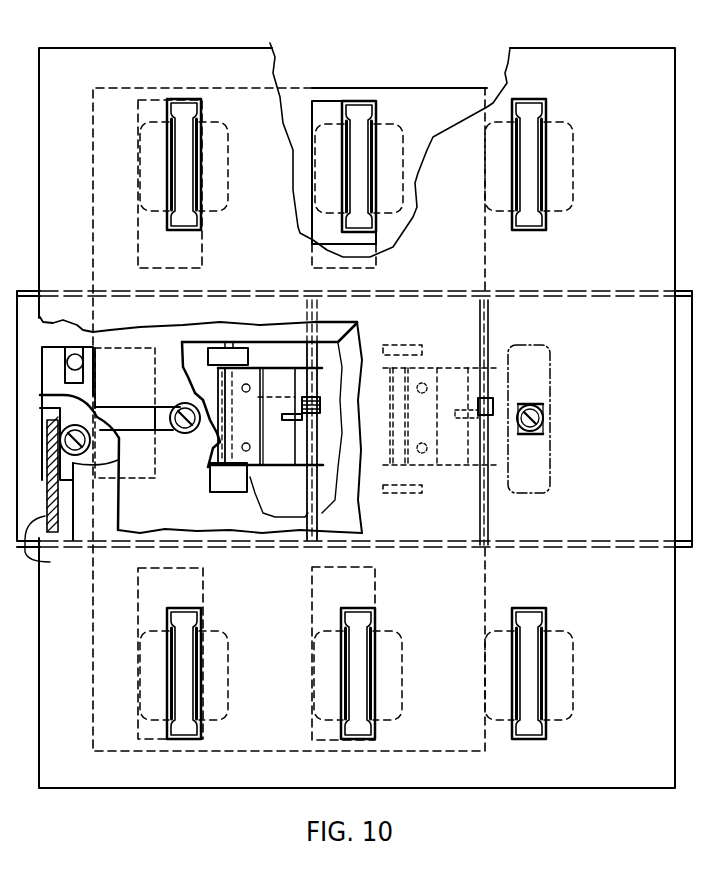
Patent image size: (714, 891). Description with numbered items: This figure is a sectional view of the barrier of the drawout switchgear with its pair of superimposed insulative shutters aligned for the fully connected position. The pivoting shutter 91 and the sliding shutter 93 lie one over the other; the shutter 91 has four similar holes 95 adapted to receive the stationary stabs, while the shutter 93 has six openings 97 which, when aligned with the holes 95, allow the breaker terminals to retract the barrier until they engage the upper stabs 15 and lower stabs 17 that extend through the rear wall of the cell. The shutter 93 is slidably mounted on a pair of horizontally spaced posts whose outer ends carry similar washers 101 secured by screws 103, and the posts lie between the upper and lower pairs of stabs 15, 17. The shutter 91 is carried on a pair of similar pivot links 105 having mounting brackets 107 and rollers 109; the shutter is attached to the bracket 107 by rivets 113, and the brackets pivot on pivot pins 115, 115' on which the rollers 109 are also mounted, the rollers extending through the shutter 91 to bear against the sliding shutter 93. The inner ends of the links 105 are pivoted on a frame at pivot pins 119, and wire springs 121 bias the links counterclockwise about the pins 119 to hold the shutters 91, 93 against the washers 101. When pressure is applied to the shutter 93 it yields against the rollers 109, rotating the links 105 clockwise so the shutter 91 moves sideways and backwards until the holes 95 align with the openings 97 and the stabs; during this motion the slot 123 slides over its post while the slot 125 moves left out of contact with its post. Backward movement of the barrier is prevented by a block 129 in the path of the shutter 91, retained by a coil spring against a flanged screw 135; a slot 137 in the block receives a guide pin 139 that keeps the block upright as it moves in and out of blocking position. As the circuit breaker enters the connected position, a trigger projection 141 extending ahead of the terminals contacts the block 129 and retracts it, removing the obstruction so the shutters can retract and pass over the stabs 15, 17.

The stationary stabs 15 is at (186, 104).
The stationary stabs 17 is at (182, 737).
The shutter 91 is at (446, 90).
The shutter 93 is at (599, 57).
The holes 95 is at (140, 116).
The openings 97 is at (170, 182).
The washers 101 is at (186, 404).
The screws 103 is at (184, 434).
The pivot links 105 is at (265, 342).
The mounting brackets 107 is at (258, 432).
The rollers 109 is at (212, 345).
The rivets 113 is at (250, 388).
The pivot pins 115 is at (314, 416).
The lower guide rail 115' is at (216, 479).
The pivot pins 119 is at (318, 340).
The wire springs 121 is at (322, 416).
The slot 123 is at (111, 406).
The slot 125 is at (460, 480).
The block 129 is at (137, 484).
The flanged screw 135 is at (97, 463).
The slot 137 is at (64, 372).
The guide pin 139 is at (79, 345).
The projection 141 is at (49, 497).